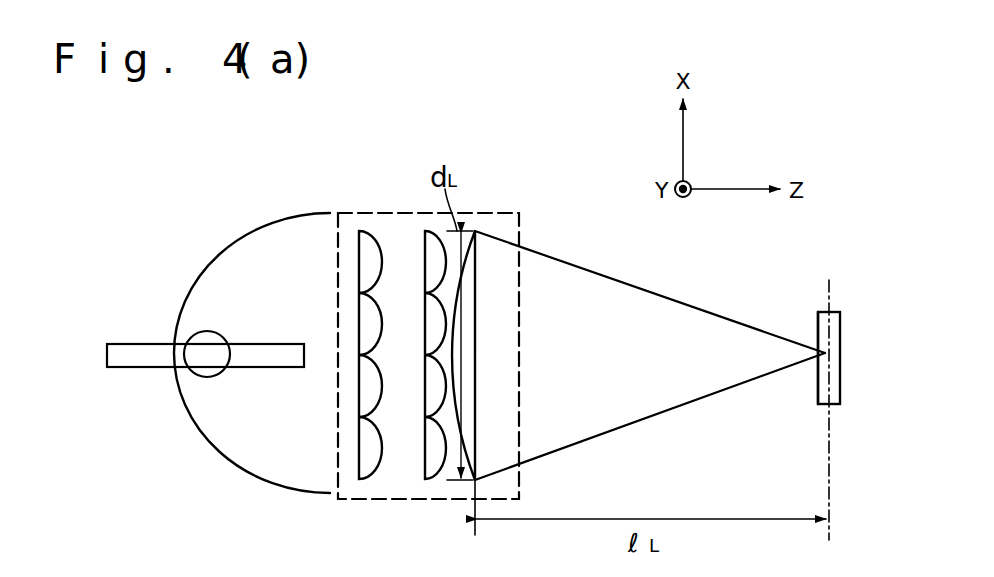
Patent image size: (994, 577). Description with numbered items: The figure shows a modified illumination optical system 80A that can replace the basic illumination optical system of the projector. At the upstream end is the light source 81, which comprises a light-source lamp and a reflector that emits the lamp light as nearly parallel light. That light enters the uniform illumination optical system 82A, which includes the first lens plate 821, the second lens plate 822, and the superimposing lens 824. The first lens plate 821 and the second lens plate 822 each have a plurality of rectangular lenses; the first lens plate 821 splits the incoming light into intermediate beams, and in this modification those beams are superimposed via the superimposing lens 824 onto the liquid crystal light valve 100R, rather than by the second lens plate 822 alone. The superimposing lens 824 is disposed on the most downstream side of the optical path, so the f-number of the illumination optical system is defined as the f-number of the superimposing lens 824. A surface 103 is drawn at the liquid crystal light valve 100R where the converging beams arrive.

The light source 81 is at (225, 230).
The illumination optical system 80A is at (297, 211).
The uniform illumination optical system 82A is at (410, 213).
The first lens plate 821 is at (372, 479).
The second lens plate 822 is at (428, 479).
The superimposing lens 824 is at (491, 452).
The liquid crystal light valve 100R is at (818, 312).
The light incident surface 103 is at (834, 359).